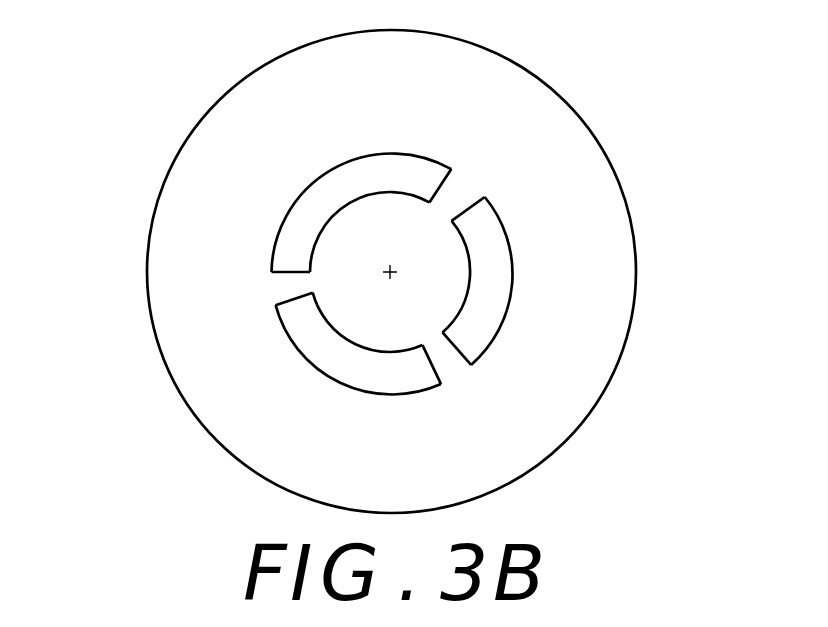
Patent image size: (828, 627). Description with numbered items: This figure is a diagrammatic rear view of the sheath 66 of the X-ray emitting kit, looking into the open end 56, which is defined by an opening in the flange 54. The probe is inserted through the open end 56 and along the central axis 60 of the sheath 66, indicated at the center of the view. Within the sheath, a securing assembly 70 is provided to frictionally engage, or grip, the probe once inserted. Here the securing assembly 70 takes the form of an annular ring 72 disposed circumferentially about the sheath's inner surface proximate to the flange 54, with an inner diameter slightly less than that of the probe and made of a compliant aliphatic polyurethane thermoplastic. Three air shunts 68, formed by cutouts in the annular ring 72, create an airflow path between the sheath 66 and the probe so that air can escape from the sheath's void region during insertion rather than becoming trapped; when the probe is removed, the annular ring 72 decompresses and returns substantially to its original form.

The sheath 66 is at (76, 204).
The flange 54 is at (583, 358).
The annular ring 72 is at (492, 272).
The open end 56 is at (353, 270).
The air shunts 68 is at (454, 192).
The securing assembly 70 is at (498, 188).
The central axis 60 is at (391, 263).